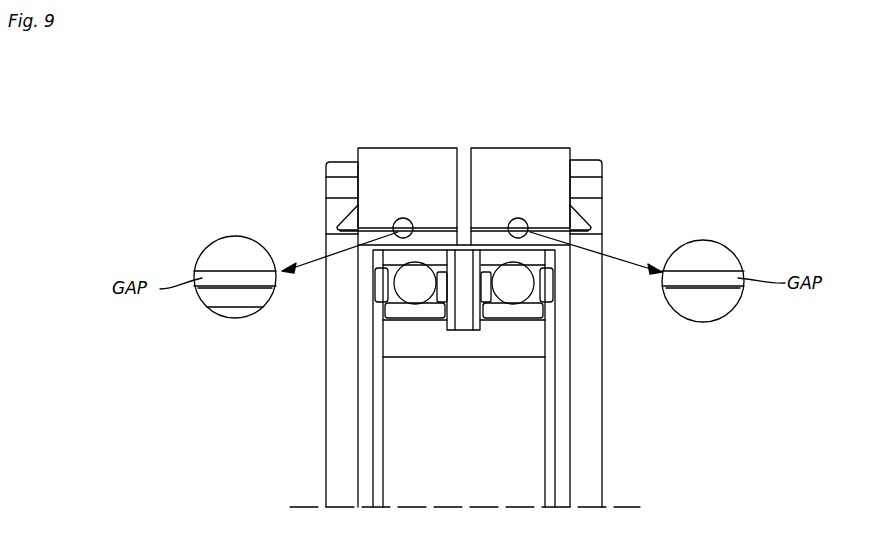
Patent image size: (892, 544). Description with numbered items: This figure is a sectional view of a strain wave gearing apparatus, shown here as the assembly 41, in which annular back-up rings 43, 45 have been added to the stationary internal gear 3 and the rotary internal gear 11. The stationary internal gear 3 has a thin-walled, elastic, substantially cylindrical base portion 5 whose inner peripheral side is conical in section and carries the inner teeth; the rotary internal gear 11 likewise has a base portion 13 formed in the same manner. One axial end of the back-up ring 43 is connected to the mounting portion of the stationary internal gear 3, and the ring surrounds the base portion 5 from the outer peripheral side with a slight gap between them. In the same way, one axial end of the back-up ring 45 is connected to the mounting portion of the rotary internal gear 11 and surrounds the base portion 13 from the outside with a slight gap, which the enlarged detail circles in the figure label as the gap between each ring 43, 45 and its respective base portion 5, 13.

The stationary internal gear 3 is at (585, 160).
The base portion 5 is at (722, 300).
The rotary internal gear 11 is at (343, 162).
The base portion 13 is at (218, 297).
The bearing unit 41 is at (664, 199).
The back-up ring 43 is at (523, 148).
The back-up ring 45 is at (403, 148).